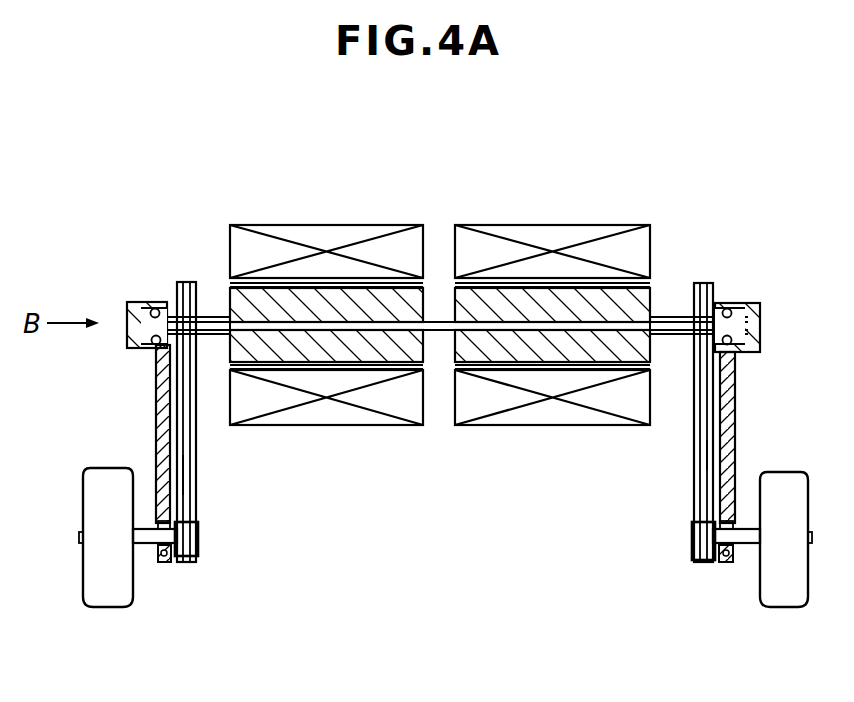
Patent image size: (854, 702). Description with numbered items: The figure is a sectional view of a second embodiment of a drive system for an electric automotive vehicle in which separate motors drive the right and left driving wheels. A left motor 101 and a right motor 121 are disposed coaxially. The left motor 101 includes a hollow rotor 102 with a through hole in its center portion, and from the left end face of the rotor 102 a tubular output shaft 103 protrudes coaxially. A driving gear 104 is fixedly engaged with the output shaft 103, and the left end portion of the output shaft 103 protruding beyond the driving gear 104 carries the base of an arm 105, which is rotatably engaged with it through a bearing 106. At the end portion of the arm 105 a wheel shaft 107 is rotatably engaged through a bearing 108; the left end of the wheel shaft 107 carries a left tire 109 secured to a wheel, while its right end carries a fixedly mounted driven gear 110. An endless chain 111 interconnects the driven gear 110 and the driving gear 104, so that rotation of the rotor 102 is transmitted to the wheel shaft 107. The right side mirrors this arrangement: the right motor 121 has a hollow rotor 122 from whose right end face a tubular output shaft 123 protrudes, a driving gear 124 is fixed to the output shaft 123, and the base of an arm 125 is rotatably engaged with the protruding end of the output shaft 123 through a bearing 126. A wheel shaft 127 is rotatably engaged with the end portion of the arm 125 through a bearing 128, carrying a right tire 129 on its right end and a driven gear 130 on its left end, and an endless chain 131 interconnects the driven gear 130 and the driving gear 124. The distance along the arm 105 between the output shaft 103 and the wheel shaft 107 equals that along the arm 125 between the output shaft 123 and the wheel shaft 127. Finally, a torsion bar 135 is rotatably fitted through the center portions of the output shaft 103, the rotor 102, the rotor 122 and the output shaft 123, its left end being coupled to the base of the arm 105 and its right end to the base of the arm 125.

The left motor 101 is at (350, 206).
The rotor 102 is at (287, 298).
The tubular output shaft 103 is at (217, 310).
The driving gear 104 is at (190, 282).
The arm 105 is at (156, 400).
The bearing 106 is at (160, 305).
The wheel shaft 107 is at (150, 544).
The bearing 108 is at (172, 560).
The left tire 109 is at (108, 578).
The driven gear 110 is at (198, 538).
The endless chain 111 is at (196, 473).
The right motor 121 is at (531, 228).
The rotor 122 is at (583, 298).
The tubular output shaft 123 is at (668, 312).
The driving gear 124 is at (693, 300).
The arm 125 is at (735, 400).
The bearing 126 is at (735, 310).
The wheel shaft 127 is at (750, 544).
The bearing 128 is at (725, 560).
The right tire 129 is at (786, 586).
The driven gear 130 is at (695, 538).
The endless chain 131 is at (700, 455).
The torsion bar 135 is at (438, 336).